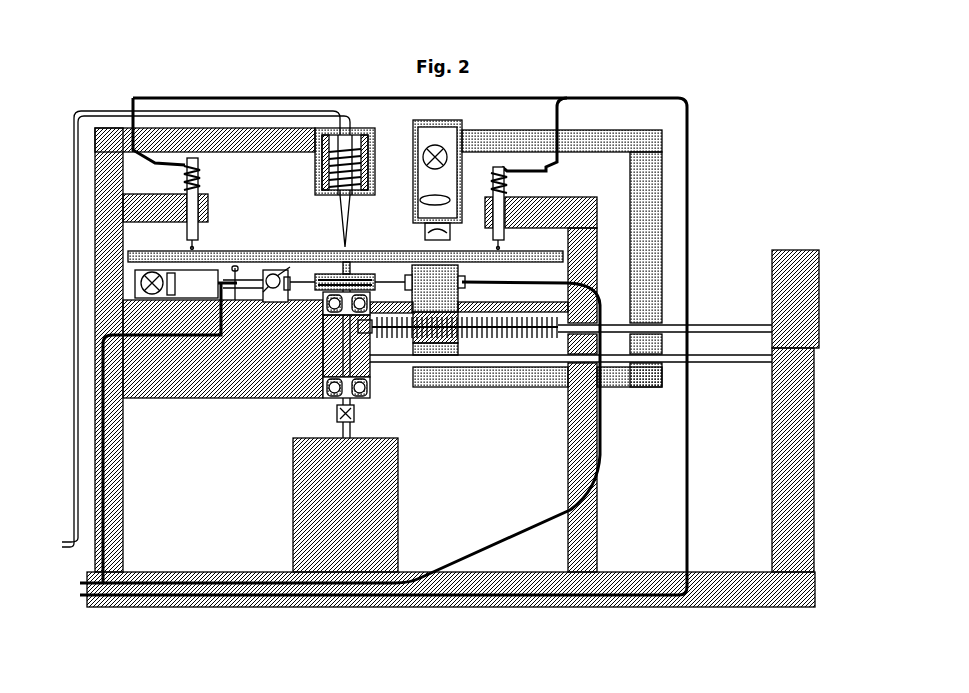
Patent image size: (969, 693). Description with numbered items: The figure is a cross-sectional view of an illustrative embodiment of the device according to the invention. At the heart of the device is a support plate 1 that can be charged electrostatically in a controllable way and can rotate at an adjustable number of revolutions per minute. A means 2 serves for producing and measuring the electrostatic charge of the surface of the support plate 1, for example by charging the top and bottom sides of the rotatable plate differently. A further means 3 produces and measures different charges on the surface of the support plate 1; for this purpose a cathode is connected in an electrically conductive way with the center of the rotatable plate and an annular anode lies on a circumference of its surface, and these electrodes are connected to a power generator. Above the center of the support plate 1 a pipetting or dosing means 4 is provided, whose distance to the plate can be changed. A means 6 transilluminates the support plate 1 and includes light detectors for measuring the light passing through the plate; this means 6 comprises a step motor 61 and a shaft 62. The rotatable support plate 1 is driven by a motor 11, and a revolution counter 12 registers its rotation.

The support plate 1 is at (545, 250).
The means for producing and measuring the electrostatic charge 2 is at (300, 284).
The means for producing and measuring different charges 3 is at (196, 230).
The pipetting or dosing means 4 is at (370, 152).
The means for transilluminating the support plate 6 is at (457, 175).
The motor 11 is at (345, 505).
The revolution counter 12 is at (182, 288).
The step motor 61 is at (792, 312).
The shaft 62 is at (747, 328).